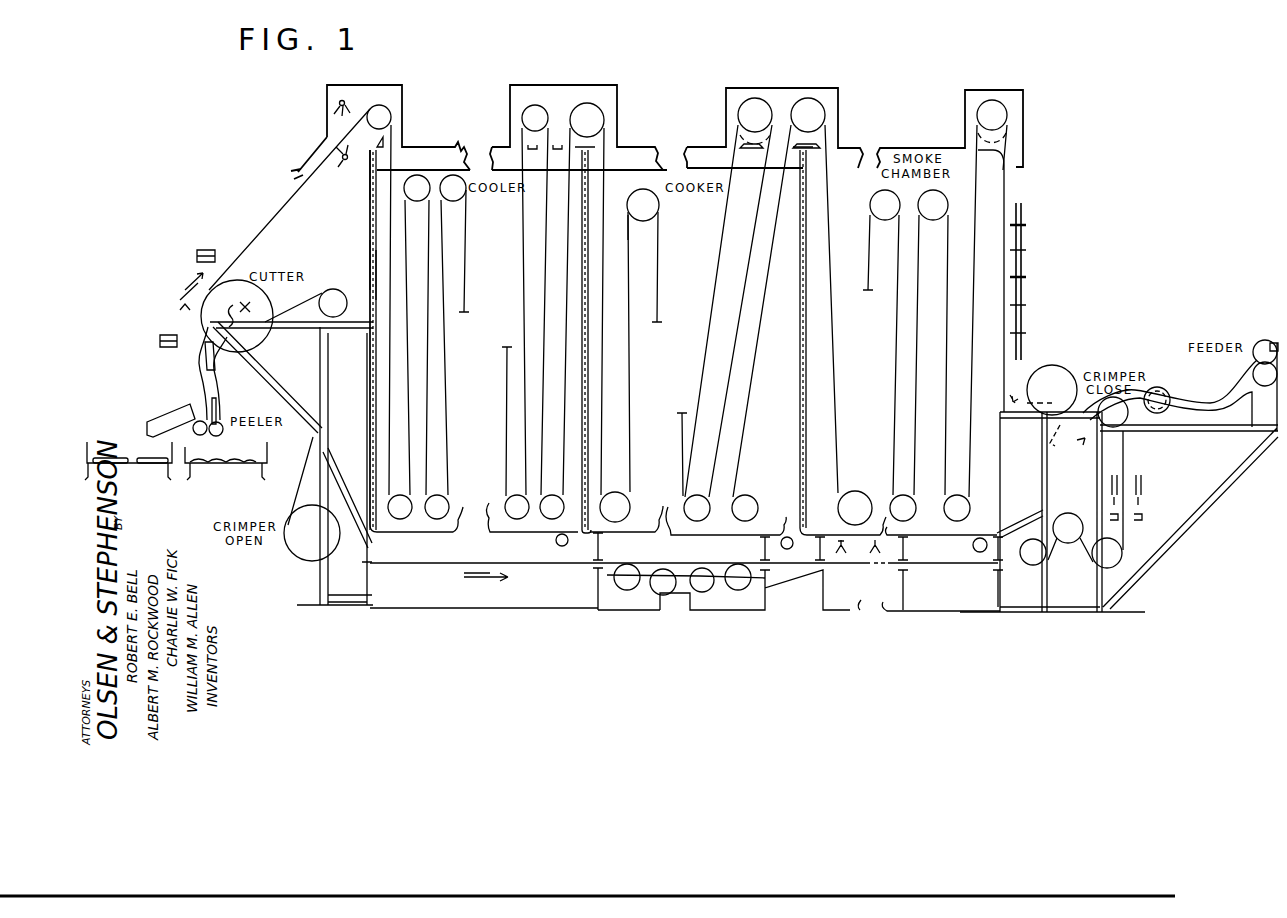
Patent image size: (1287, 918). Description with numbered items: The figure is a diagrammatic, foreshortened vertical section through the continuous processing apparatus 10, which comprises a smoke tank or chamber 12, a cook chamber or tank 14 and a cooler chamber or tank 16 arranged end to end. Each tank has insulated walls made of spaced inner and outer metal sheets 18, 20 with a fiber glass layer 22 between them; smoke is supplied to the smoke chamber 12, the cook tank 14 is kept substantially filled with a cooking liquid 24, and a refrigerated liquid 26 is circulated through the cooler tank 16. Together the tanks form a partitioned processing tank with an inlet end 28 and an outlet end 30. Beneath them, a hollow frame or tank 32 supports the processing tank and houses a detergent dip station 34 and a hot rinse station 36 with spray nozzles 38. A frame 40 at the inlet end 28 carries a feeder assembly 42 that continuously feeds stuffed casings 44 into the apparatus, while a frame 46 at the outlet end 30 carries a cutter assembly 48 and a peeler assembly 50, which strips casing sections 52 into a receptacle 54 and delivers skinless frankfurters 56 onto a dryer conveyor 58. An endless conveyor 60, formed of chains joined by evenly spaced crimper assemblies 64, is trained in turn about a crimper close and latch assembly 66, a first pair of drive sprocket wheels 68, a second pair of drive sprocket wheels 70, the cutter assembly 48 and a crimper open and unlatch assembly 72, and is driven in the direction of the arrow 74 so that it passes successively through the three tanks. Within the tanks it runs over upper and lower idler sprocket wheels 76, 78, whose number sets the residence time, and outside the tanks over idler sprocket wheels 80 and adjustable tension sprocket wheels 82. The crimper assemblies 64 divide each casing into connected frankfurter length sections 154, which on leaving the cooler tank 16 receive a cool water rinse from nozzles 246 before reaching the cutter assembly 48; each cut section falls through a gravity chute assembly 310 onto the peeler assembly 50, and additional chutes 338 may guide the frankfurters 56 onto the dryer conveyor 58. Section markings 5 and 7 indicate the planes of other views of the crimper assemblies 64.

The continuous processing apparatus 10 is at (902, 95).
The smoke tank or chamber 12 is at (836, 330).
The cook chamber or tank 14 is at (594, 330).
The cooler chamber or tank 16 is at (354, 320).
The inner metal sheet 18 is at (375, 255).
The outer metal sheet 20 is at (370, 237).
The fiber glass layer 22 is at (370, 258).
The cooking liquid 24 is at (639, 152).
The refrigerated liquid 26 is at (424, 148).
The inlet end 28 is at (1005, 190).
The outlet end 30 is at (370, 203).
The hollow frame or tank 32 is at (539, 617).
The detergent dip station 34 is at (710, 615).
The hot rinse station 36 is at (848, 614).
The spray nozzles 38 is at (858, 547).
The frame 40 is at (1202, 525).
The feeder assembly 42 is at (1263, 342).
The stuffed casings 44 is at (1181, 400).
The frame 46 is at (298, 360).
The cutter assembly 48 is at (278, 301).
The peeler assembly 50 is at (230, 405).
The casing sections 52 is at (254, 458).
The receptacle 54 is at (267, 449).
The skinless frankfurters 56 is at (110, 457).
The dryer conveyor 58 is at (123, 468).
The endless conveyor 60 is at (619, 389).
The crimper assemblies 64 is at (1030, 297).
The crimper close and latch assembly 66 is at (1063, 360).
The first pair of drive sprocket wheels 68 is at (799, 101).
The second pair of drive sprocket wheels 70 is at (588, 112).
The crimper open and unlatch assembly 72 is at (279, 554).
The arrow 74 is at (684, 578).
The upper idler sprocket wheels 76 is at (452, 175).
The lower idler sprocket wheels 78 is at (434, 511).
The idler sprocket wheels 80 is at (380, 109).
The sprocket wheels 82 is at (336, 296).
The frankfurter length sections 154 is at (1025, 254).
The nozzles 246 is at (333, 185).
The gravity conveyor or chute assembly 310 is at (195, 390).
The additional chutes 338 is at (157, 419).
The section line 5 is at (280, 568).
The section line 7 is at (1045, 409).